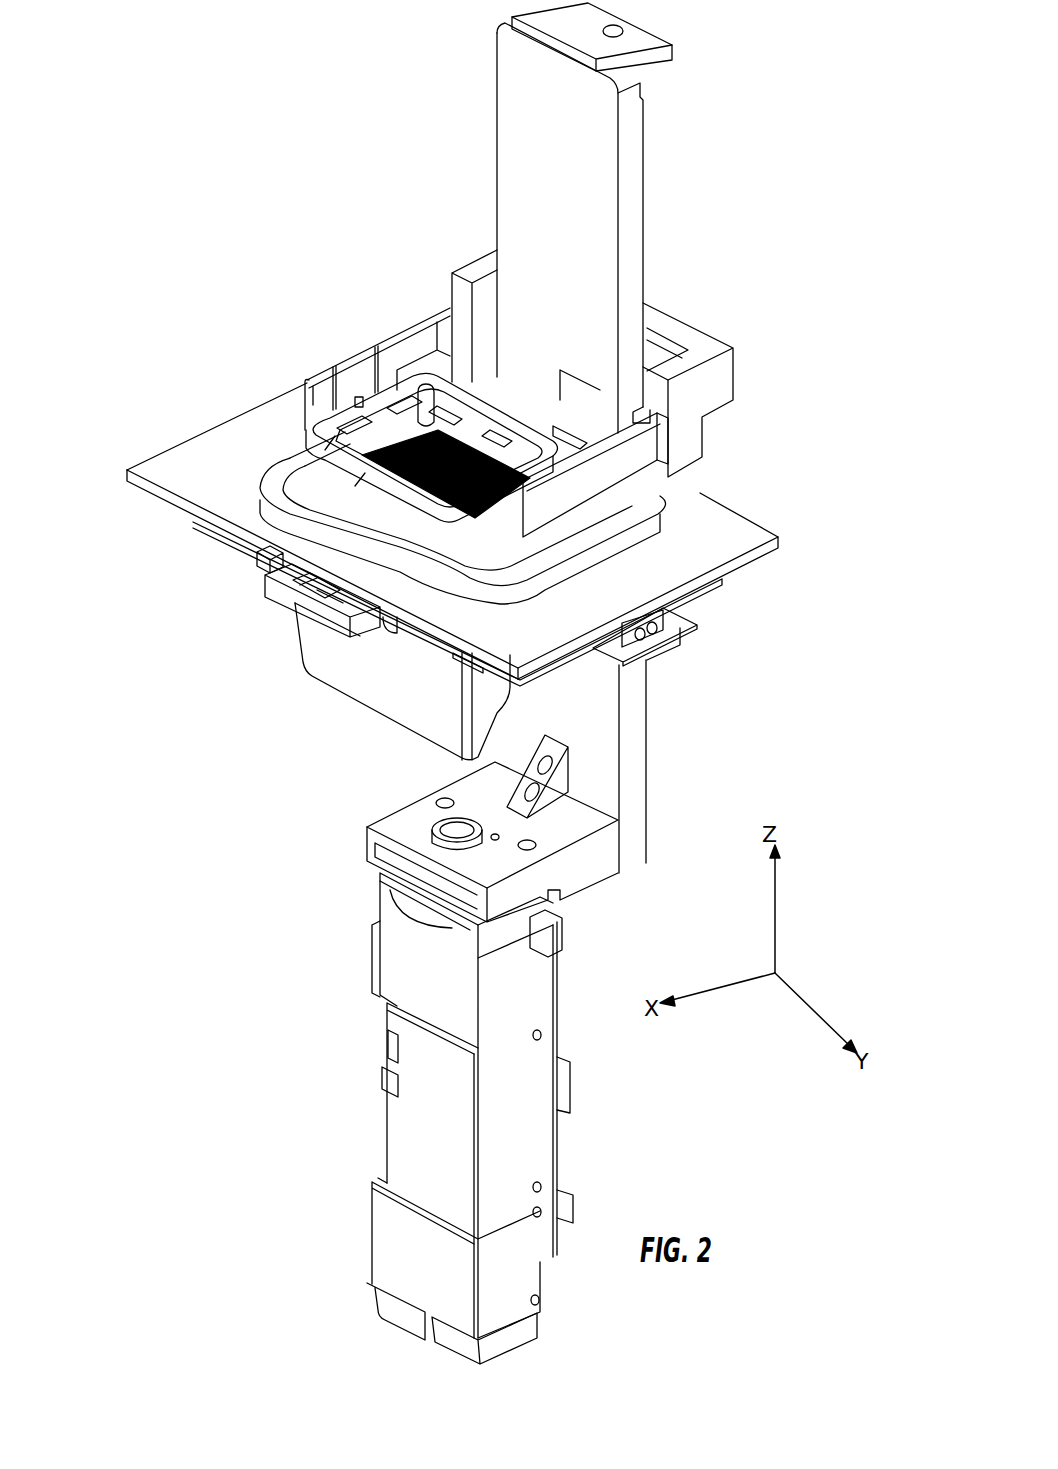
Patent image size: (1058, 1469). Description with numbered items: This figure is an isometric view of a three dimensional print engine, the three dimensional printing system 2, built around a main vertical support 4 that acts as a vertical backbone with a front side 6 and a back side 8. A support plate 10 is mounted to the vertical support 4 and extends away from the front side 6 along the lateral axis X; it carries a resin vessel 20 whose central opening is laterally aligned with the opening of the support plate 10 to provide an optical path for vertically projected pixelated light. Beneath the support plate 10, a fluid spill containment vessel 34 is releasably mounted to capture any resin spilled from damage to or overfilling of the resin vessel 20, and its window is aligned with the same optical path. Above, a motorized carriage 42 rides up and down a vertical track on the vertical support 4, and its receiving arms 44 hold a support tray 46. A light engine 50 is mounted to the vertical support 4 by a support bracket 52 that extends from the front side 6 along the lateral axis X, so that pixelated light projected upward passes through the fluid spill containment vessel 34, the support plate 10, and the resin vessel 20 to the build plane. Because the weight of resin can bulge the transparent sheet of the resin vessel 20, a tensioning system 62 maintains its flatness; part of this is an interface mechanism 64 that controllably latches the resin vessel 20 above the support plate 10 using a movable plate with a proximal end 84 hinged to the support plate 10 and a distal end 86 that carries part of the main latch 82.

The three dimensional printing system 2 is at (754, 87).
The main vertical support 4 is at (636, 174).
The front side 6 is at (521, 178).
The back side 8 is at (643, 229).
The support plate 10 is at (710, 593).
The resin vessel 20 is at (267, 480).
The fluid spill containment vessel 34 is at (378, 685).
The motorized carriage 42 is at (720, 372).
The receiving arms 44 is at (573, 488).
The support tray 46 is at (349, 411).
The light engine 50 is at (527, 1120).
The support bracket 52 is at (387, 827).
The tensioning system 62 is at (807, 552).
The interface mechanism 64 is at (148, 562).
The main latch 82 is at (148, 474).
The proximal end 84 is at (740, 525).
The distal end 86 is at (245, 553).